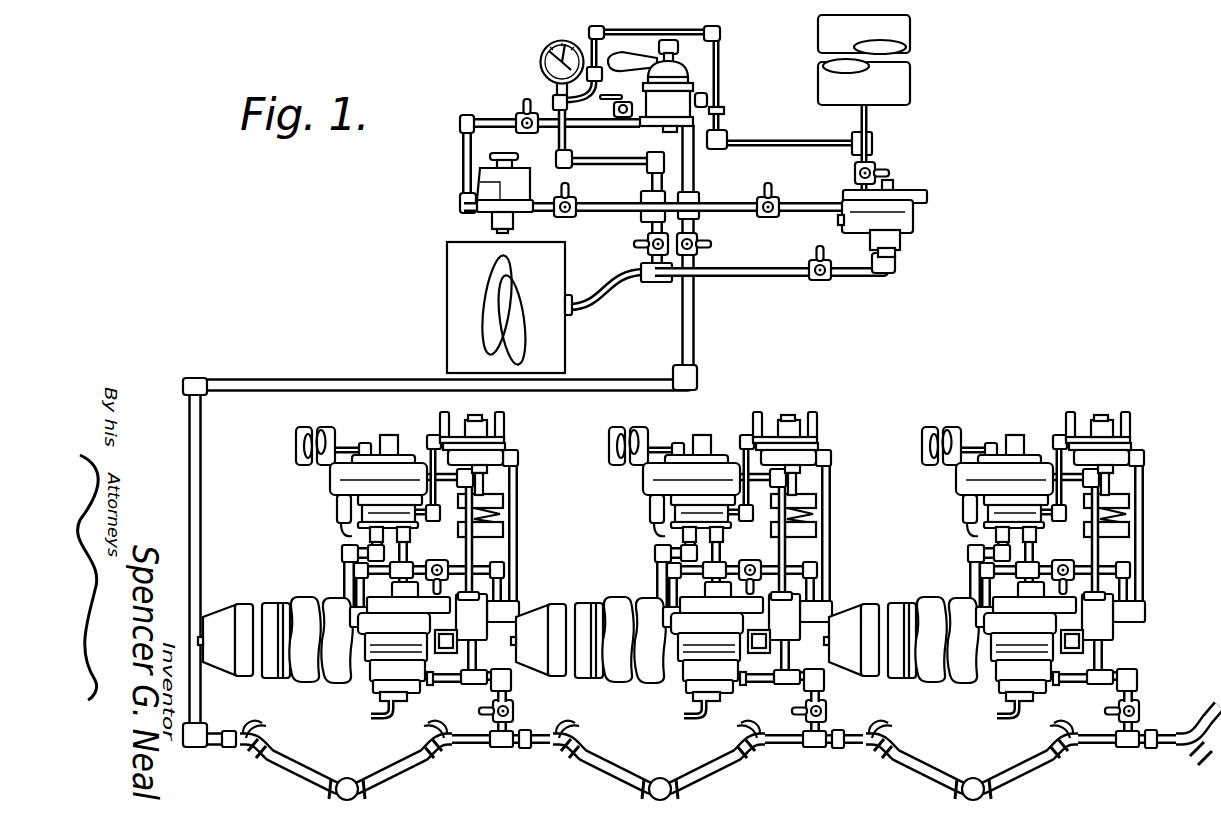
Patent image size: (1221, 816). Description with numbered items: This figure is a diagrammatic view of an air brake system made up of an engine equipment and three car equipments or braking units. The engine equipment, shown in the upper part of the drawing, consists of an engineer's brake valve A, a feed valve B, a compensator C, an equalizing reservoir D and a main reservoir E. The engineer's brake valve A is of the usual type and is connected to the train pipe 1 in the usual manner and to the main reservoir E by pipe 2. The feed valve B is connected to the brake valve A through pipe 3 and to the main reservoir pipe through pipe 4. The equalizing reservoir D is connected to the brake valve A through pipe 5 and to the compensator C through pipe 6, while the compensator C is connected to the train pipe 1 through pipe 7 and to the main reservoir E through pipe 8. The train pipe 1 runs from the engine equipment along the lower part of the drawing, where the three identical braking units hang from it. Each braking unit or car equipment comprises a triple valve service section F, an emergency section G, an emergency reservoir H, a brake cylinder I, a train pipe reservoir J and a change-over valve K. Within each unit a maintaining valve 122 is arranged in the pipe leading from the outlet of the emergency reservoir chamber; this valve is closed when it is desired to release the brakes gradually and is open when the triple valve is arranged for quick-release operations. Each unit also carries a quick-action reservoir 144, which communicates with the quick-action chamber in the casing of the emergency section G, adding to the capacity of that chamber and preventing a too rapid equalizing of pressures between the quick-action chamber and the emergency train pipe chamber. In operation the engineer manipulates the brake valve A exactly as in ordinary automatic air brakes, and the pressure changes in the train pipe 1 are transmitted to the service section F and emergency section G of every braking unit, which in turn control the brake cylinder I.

The train pipe 1 is at (693, 170).
The pipe 2 is at (650, 183).
The pipe 3 is at (462, 165).
The pipe 4 is at (600, 208).
The pipe 5 is at (758, 142).
The pipe 6 is at (873, 161).
The pipe 7 is at (801, 208).
The pipe 8 is at (853, 278).
The maintaining valve 122 is at (440, 557).
The quick-action reservoir 144 is at (305, 432).
The engineer's brake valve A is at (680, 73).
The feed valve B is at (512, 167).
The compensator C is at (897, 221).
The equalizing reservoir D is at (901, 88).
The main reservoir E is at (553, 255).
The triple valve service section F is at (367, 657).
The emergency section G is at (342, 490).
The emergency reservoir H is at (306, 600).
The brake cylinder I is at (246, 604).
The train pipe reservoir J is at (500, 502).
The change-over valve K is at (505, 451).